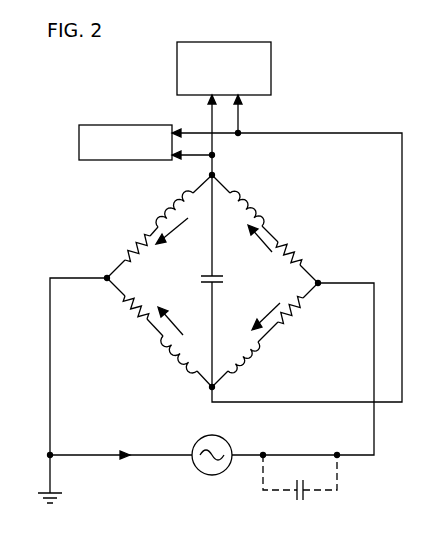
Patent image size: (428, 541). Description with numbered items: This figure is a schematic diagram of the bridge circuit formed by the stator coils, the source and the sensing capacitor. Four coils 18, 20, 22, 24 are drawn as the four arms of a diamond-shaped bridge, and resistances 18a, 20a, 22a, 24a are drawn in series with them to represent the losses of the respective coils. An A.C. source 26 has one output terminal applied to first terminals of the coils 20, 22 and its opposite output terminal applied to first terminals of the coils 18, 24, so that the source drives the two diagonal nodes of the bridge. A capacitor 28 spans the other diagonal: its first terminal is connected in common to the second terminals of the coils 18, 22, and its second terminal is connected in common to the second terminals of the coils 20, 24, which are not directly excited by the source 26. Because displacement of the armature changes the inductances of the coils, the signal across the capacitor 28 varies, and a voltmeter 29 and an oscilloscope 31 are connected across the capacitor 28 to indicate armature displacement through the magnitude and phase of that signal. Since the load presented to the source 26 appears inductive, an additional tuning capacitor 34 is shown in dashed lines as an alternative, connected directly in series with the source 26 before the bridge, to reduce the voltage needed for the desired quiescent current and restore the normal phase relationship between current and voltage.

The coil 18 is at (240, 193).
The resistance 18a is at (287, 243).
The coil 20 is at (190, 365).
The resistance 20a is at (140, 318).
The coil 22 is at (168, 213).
The resistance 22a is at (128, 245).
The coil 24 is at (248, 350).
The resistance 24a is at (290, 315).
The A.C. source 26 is at (200, 469).
The capacitor 28 is at (215, 284).
The voltmeter 29 is at (215, 42).
The oscilloscope 31 is at (130, 125).
The tuning capacitor 34 is at (292, 496).